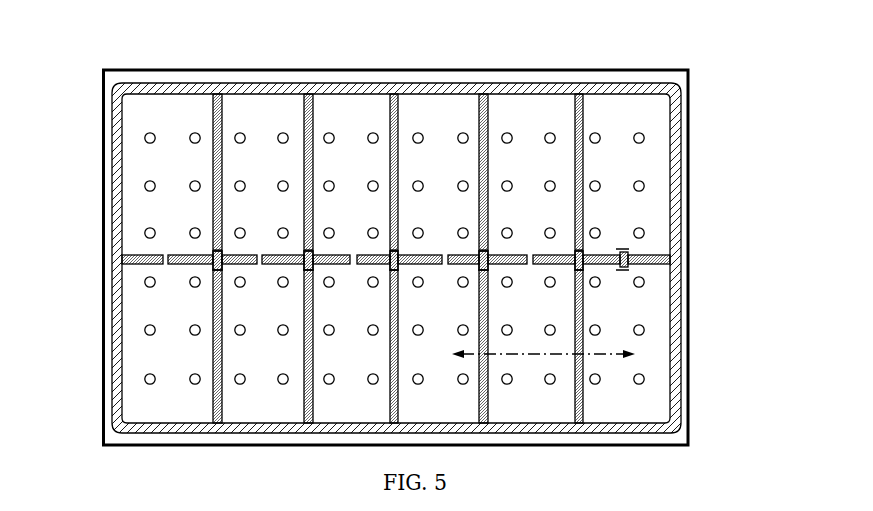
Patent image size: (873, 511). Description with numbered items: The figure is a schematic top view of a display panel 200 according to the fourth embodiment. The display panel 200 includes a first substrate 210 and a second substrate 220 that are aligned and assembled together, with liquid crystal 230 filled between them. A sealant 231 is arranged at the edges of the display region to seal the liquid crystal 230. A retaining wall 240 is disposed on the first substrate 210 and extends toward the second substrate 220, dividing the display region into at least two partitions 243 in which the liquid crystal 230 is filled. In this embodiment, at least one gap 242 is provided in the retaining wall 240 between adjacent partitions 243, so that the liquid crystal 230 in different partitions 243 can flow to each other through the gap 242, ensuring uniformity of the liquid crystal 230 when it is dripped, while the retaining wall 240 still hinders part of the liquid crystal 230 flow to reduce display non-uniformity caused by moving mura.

The display panel 200 is at (119, 32).
The first substrate 210 is at (747, 58).
The second substrate 220 is at (396, 257).
The sealant 231 is at (678, 167).
The liquid crystal 230 is at (644, 185).
The retaining wall 240 is at (678, 263).
The gap 242 is at (642, 264).
The partitions 243 is at (488, 103).